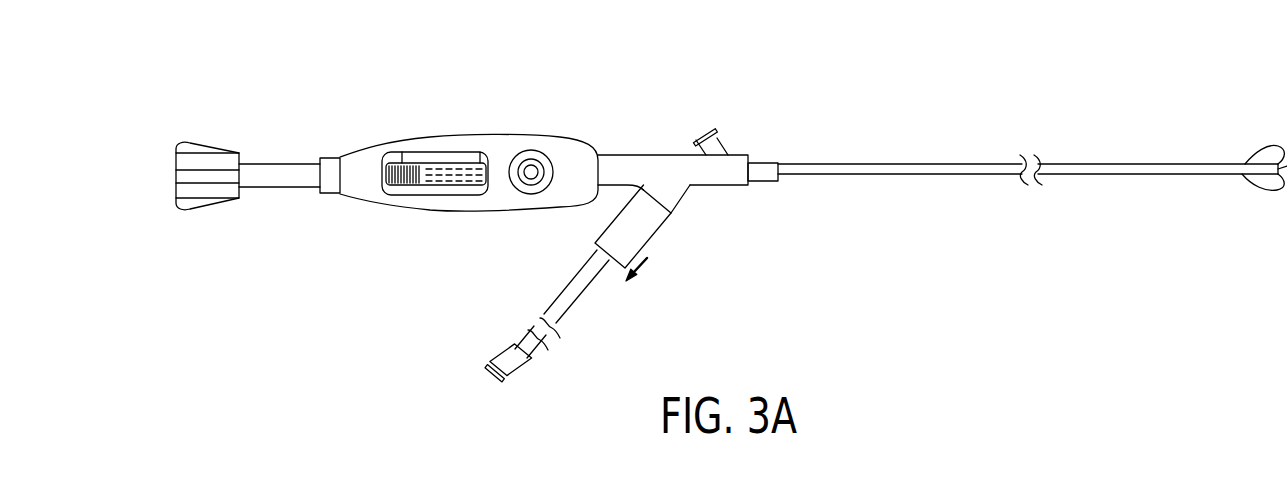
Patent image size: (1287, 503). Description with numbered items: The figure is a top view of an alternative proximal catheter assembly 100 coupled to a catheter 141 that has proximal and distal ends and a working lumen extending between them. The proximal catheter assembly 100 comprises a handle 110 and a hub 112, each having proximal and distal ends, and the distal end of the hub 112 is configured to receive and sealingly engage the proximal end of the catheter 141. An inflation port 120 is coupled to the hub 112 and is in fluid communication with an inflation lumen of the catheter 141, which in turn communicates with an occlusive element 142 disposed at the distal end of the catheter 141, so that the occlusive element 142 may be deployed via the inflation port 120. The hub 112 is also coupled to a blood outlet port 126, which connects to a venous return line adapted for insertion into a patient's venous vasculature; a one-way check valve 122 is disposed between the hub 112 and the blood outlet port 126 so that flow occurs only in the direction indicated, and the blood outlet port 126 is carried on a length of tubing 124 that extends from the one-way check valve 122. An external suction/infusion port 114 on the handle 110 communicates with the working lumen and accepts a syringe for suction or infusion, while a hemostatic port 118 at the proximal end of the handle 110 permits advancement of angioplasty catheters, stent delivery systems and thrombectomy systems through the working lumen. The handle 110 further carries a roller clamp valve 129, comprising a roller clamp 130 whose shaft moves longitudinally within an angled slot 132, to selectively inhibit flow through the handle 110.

The proximal catheter assembly 100 is at (287, 106).
The handle 110 is at (462, 226).
The hub 112 is at (641, 144).
The external suction/infusion port 114 is at (530, 158).
The hemostatic port 118 is at (196, 210).
The inflation port 120 is at (712, 126).
The one-way check valve 122 is at (646, 246).
The flush tubing 124 is at (578, 305).
The blood outlet port 126 is at (525, 370).
The roller clamp valve 129 is at (413, 204).
The roller clamp 130 is at (397, 167).
The angled slot 132 is at (437, 156).
The catheter 141 is at (985, 176).
The occlusive element 142 is at (1266, 192).